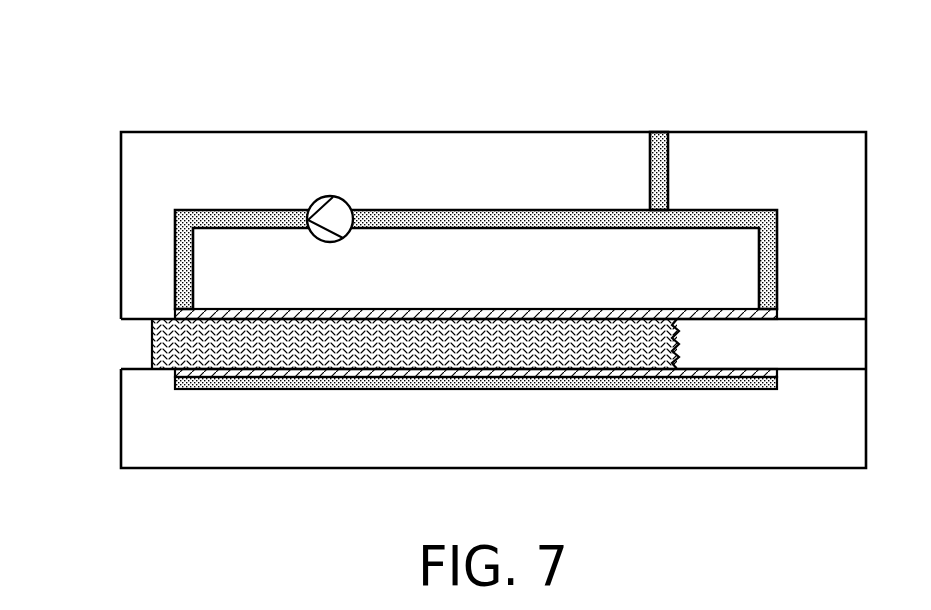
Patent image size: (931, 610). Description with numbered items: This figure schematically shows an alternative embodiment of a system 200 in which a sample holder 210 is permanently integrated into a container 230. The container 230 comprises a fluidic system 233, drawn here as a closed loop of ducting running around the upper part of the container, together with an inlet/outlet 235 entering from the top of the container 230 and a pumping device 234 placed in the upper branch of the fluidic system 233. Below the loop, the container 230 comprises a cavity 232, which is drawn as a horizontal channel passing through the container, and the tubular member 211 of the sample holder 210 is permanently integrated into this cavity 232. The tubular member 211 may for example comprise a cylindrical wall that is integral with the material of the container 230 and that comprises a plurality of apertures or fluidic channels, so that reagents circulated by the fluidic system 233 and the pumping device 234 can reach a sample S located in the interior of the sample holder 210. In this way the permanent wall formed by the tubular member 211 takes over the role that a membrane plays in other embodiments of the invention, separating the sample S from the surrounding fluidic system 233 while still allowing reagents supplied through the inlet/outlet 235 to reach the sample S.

The system 200 is at (130, 94).
The container 230 is at (782, 118).
The cavity 232 is at (138, 372).
The fluidic system 233 is at (494, 209).
The pumping device 234 is at (312, 200).
The inlet/outlet 235 is at (659, 140).
The sample S is at (533, 352).
The sample holder 210 is at (774, 376).
The tubular member 211 is at (700, 382).